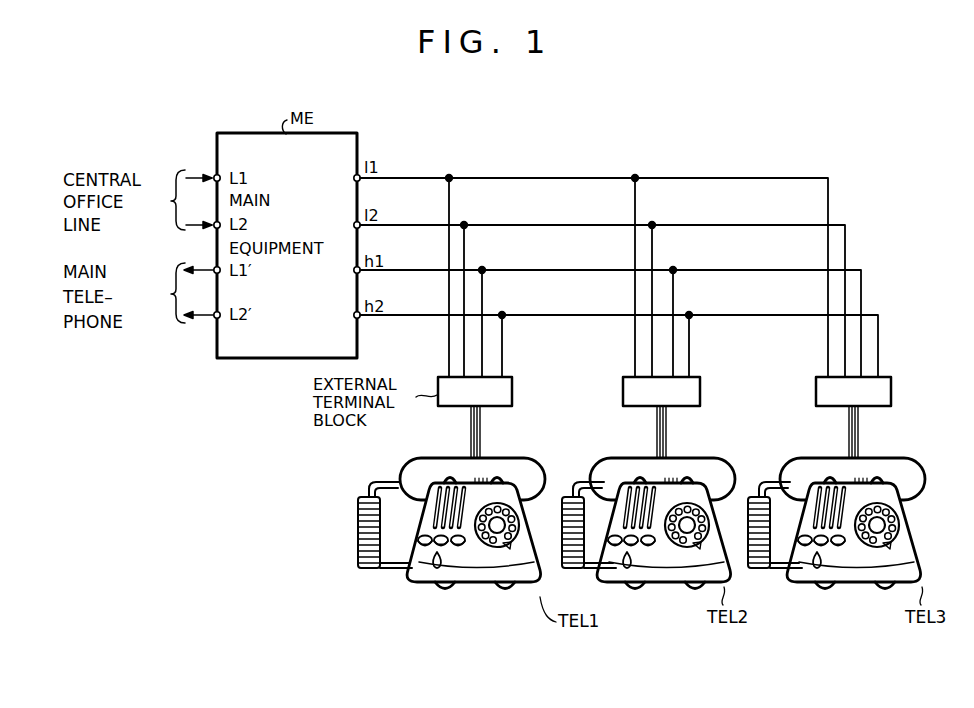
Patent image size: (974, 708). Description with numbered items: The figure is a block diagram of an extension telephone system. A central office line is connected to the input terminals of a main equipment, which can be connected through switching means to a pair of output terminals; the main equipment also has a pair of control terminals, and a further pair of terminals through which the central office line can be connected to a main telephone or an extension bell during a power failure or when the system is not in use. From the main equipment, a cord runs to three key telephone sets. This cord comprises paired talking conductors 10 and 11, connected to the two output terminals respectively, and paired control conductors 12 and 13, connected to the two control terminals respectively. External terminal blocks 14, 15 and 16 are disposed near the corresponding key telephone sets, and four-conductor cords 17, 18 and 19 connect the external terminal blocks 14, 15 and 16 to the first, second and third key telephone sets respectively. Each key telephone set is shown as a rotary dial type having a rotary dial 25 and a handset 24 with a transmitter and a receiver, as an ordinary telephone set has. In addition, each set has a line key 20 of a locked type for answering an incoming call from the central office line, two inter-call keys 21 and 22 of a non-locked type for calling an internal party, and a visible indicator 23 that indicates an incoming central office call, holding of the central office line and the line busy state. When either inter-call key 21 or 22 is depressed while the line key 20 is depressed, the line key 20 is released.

The talking conductor 10 is at (547, 177).
The talking conductor 11 is at (547, 224).
The control conductor 12 is at (547, 269).
The control conductor 13 is at (550, 314).
The external terminal block 14 is at (503, 394).
The external terminal block 15 is at (693, 394).
The external terminal block 16 is at (884, 394).
The four-conductor cord 17 is at (479, 429).
The four-conductor cord 18 is at (667, 430).
The four-conductor cord 19 is at (867, 430).
The line key 20 is at (392, 579).
The inter-call key 21 is at (477, 580).
The inter-call key 22 is at (524, 600).
The visible indicator 23 is at (449, 600).
The handset 24 is at (454, 475).
The rotary dial 25 is at (518, 551).